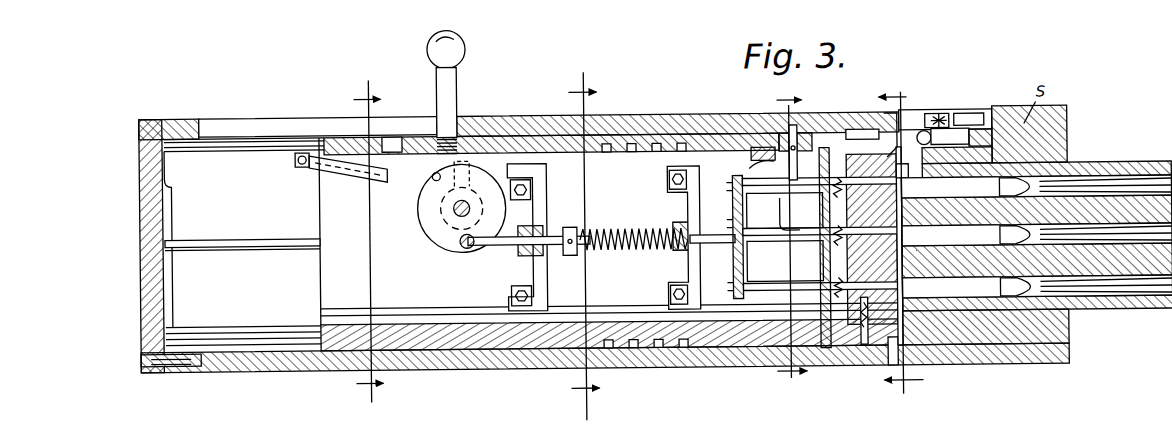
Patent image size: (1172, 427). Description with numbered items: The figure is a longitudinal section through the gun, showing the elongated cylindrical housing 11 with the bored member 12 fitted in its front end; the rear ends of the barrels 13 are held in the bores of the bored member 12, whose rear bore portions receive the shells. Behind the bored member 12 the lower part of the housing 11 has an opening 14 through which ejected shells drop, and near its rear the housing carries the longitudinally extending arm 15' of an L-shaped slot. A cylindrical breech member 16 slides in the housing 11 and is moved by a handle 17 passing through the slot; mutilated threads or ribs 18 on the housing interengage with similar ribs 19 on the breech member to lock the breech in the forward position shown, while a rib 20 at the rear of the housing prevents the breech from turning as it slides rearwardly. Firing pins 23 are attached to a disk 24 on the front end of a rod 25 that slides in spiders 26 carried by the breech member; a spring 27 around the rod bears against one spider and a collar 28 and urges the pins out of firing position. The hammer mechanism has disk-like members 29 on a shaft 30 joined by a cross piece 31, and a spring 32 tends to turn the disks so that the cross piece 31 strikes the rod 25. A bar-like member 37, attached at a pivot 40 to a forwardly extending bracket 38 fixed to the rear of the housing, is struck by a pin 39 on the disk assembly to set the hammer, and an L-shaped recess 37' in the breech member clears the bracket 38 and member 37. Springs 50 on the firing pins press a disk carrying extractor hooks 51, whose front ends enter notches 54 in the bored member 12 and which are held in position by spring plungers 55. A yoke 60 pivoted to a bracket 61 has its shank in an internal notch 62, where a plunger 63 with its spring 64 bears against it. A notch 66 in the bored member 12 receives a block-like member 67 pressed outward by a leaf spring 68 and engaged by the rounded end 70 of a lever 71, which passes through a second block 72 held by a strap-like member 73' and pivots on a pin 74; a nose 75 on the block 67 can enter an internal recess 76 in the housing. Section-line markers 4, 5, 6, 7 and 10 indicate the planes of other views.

The section line 4- 4 is at (368, 245).
The section line 5- 5 is at (585, 240).
The section line 6- 6 is at (783, 236).
The section line 7- 7 is at (901, 248).
The locking pin 10 is at (864, 350).
The housing 11 is at (507, 370).
The bored member 12 is at (1069, 330).
The barrels 13 is at (1120, 270).
The opening 14 is at (831, 320).
The longitudinal arm of L-shaped slot 15' is at (317, 112).
The breech member 16 is at (442, 337).
The handle 17 is at (458, 94).
The mutilated threads or ribs 18 is at (633, 128).
The threads or ribs 19 is at (669, 130).
The rib 20 is at (276, 250).
The firing pins 23 is at (733, 199).
The disk 24 is at (790, 251).
The rod 25 is at (506, 250).
The spiders 26 is at (541, 237).
The spring 27 is at (624, 252).
The collar 28 is at (577, 228).
The disk-like members 29 is at (434, 222).
The shaft 30 is at (454, 205).
The cross piece 31 is at (464, 253).
The spring 32 is at (542, 237).
The bar-like member 37 is at (348, 190).
The L-shaped recess 37' is at (399, 120).
The bracket 38 is at (258, 170).
The pin 39 is at (433, 177).
The pivot 40 is at (304, 167).
The springs 50 is at (830, 252).
The extractor hooks 51 is at (905, 240).
The notches 54 is at (922, 367).
The spring plungers 55 is at (812, 248).
The yoke 60 is at (792, 212).
The bracket 61 is at (752, 167).
The internal notch 62 is at (757, 148).
The plunger 63 is at (858, 132).
The spring 64 is at (822, 128).
The notch 66 is at (1020, 130).
The block-like member 67 is at (968, 233).
The leaf spring 68 is at (950, 132).
The rounded end 70 is at (957, 170).
The lever 71 is at (942, 112).
The second block 72 is at (977, 112).
The strap-like member 73' is at (983, 80).
The pin 74 is at (929, 133).
The nose 75 is at (906, 179).
The internal recess 76 is at (913, 112).